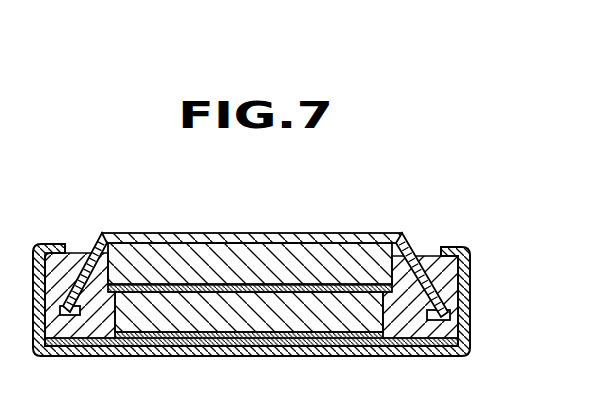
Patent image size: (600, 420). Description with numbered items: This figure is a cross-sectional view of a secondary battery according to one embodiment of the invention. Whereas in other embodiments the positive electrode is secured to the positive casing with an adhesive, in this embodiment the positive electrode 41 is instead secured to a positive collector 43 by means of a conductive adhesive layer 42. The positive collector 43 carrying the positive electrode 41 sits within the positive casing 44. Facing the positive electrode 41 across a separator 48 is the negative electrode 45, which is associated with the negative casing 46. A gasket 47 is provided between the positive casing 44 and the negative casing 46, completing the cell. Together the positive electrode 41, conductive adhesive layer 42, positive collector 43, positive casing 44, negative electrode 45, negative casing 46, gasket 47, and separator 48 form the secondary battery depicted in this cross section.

The positive electrode 41 is at (154, 354).
The conductive adhesive layer 42 is at (260, 337).
The positive collector 43 is at (209, 352).
The positive casing 44 is at (283, 350).
The negative electrode 45 is at (203, 257).
The negative casing 46 is at (149, 237).
The gasket 47 is at (440, 274).
The separator 48 is at (354, 295).